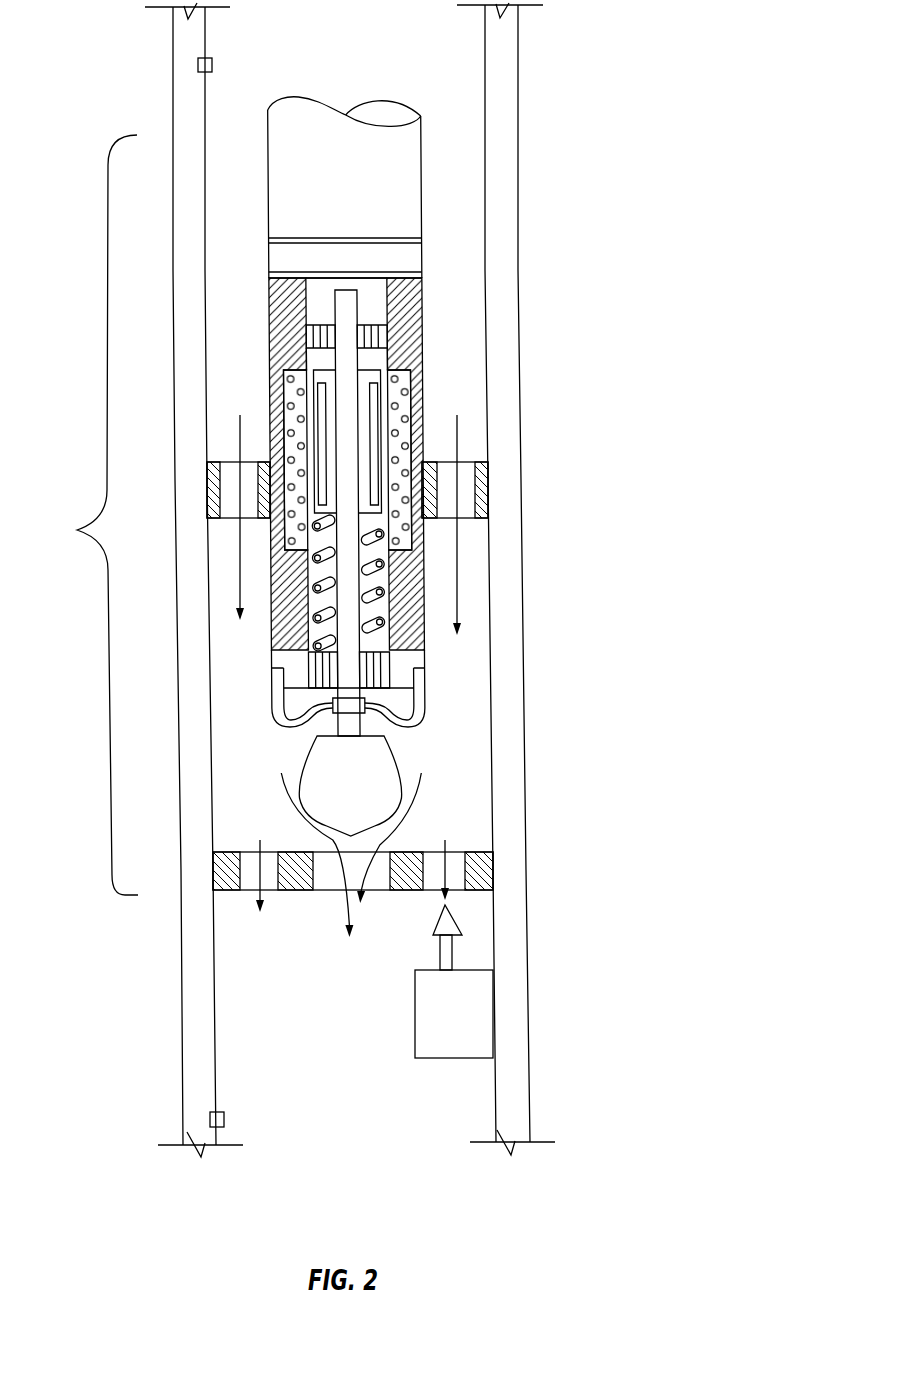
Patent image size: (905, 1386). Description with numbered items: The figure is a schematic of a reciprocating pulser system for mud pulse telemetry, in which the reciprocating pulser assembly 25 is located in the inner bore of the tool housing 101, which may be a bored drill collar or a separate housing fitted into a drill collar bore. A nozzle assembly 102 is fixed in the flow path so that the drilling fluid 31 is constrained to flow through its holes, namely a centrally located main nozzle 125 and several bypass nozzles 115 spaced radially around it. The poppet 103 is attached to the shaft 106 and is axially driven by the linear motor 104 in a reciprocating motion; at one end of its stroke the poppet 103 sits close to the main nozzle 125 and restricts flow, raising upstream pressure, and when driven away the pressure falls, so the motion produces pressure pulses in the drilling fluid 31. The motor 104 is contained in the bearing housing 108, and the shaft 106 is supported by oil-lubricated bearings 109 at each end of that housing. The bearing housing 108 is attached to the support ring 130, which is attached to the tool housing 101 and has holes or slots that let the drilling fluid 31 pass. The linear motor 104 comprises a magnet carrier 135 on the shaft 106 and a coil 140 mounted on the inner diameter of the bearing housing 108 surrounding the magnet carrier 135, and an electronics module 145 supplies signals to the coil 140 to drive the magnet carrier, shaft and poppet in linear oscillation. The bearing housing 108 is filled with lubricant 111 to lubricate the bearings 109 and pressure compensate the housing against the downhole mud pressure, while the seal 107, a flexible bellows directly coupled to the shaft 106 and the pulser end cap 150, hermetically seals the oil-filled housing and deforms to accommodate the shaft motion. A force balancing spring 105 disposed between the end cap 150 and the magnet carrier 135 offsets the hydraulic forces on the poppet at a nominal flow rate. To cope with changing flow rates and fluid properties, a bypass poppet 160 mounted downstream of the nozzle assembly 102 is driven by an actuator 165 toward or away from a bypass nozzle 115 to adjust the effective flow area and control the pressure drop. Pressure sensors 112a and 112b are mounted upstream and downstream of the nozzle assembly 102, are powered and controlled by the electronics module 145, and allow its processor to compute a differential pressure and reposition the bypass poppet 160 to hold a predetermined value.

The reciprocating pulser assembly 25 is at (94, 515).
The drilling fluid 31 is at (228, 262).
The tool housing 101 is at (519, 62).
The nozzle assembly 102 is at (495, 870).
The poppet 103 is at (398, 772).
The linear motor 104 is at (418, 410).
The force balancing spring 105 is at (382, 567).
The shaft 106 is at (405, 328).
The seal 107 is at (427, 703).
The bearing housing 108 is at (421, 277).
The bearings 109 is at (310, 335).
The lubricant 111 is at (375, 316).
The pressure sensor 112a is at (200, 62).
The pressure sensor 112b is at (210, 1118).
The bypass nozzles 115 is at (268, 848).
The main nozzle 125 is at (395, 808).
The support ring 130 is at (467, 455).
The magnet carrier 135 is at (405, 368).
The coil 140 is at (405, 382).
The electronics module 145 is at (421, 146).
The pulser end cap 150 is at (427, 664).
The bypass poppet 160 is at (433, 930).
The actuator 165 is at (425, 1017).